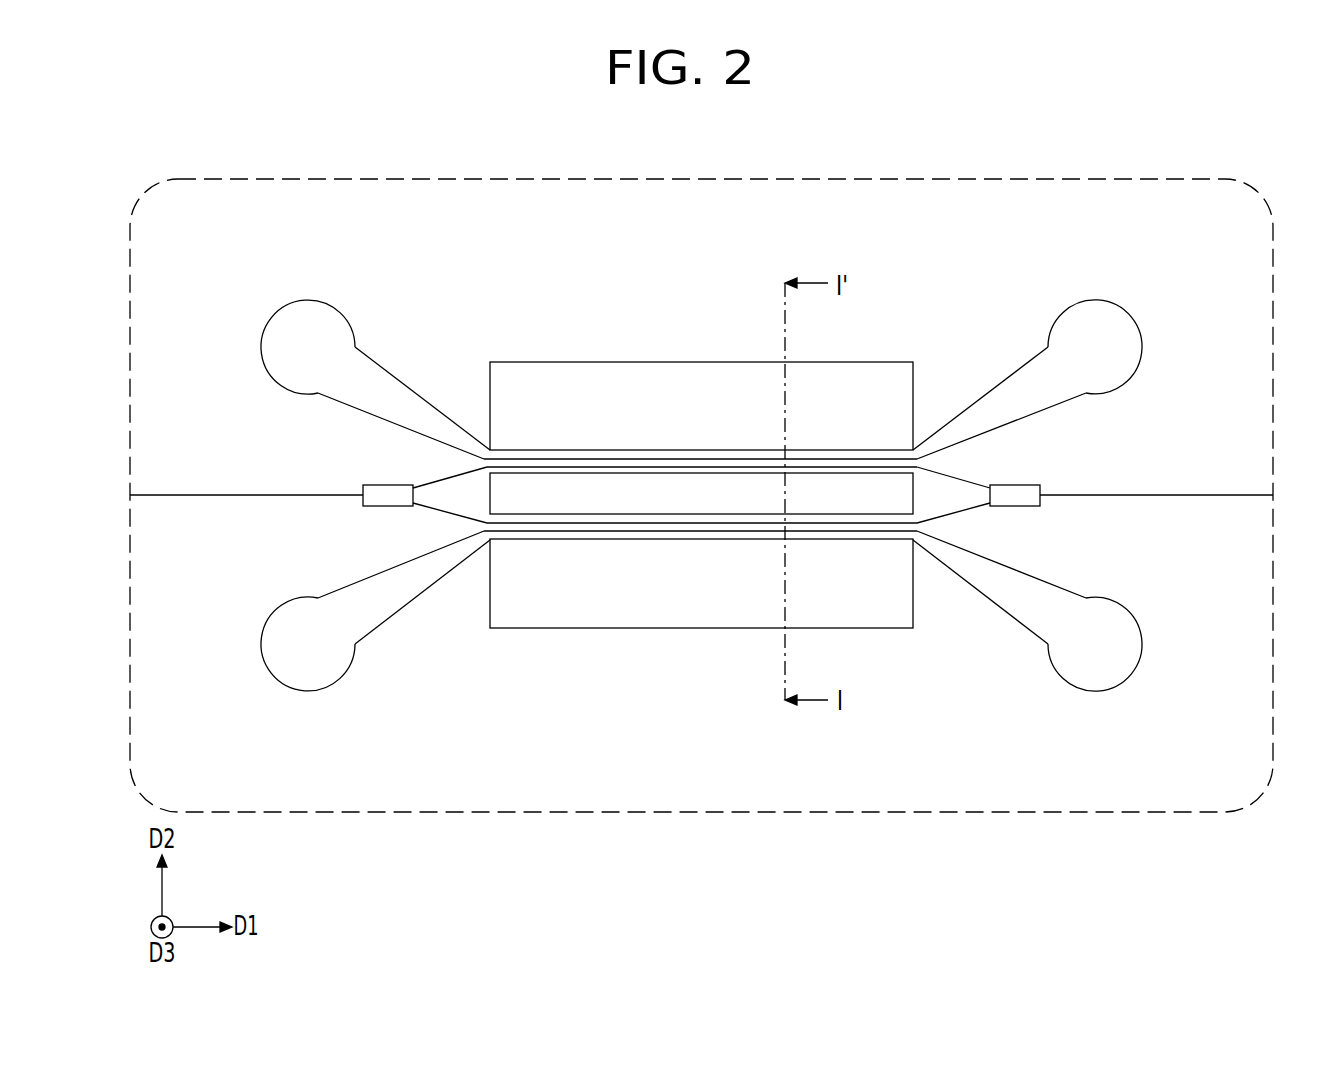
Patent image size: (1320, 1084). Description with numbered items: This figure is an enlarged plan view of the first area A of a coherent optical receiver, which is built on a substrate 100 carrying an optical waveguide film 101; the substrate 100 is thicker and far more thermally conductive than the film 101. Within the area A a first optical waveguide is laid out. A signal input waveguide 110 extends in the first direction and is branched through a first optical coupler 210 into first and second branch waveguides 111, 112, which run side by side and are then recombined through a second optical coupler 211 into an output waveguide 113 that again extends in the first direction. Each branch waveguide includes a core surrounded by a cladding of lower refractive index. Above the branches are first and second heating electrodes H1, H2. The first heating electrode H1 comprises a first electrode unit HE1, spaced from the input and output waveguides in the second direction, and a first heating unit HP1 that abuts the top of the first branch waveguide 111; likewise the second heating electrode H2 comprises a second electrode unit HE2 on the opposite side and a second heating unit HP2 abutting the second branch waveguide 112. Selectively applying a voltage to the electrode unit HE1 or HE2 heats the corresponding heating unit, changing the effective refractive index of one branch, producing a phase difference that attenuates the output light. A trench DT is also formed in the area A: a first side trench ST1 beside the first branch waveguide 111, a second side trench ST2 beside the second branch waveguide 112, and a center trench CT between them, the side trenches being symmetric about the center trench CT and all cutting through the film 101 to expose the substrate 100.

The first area A is at (1220, 130).
The substrate 100 is at (545, 617).
The optical waveguide film 101 is at (508, 811).
The signal input waveguide 110 is at (218, 495).
The first branch waveguide 111 is at (441, 495).
The second branch waveguide 112 is at (441, 495).
The output waveguide 113 is at (1180, 495).
The first optical coupler 210 is at (385, 492).
The second optical coupler 211 is at (1013, 492).
The trench DT is at (768, 291).
The first side trench ST1 is at (748, 362).
The second side trench ST2 is at (628, 622).
The center trench CT is at (693, 477).
The first heating electrode H1 is at (868, 233).
The first heating unit HP1 is at (888, 459).
The first electrode unit HE1 is at (1093, 312).
The second heating electrode H2 is at (868, 752).
The second heating unit HP2 is at (888, 532).
The second electrode unit HE2 is at (1094, 681).